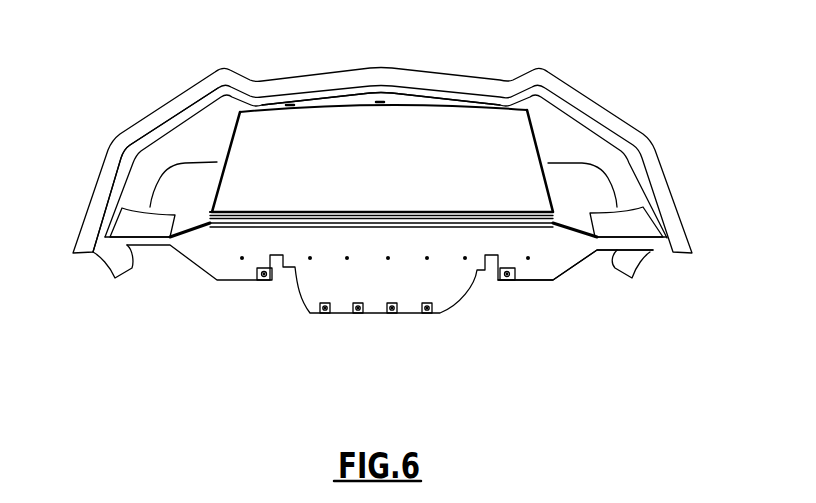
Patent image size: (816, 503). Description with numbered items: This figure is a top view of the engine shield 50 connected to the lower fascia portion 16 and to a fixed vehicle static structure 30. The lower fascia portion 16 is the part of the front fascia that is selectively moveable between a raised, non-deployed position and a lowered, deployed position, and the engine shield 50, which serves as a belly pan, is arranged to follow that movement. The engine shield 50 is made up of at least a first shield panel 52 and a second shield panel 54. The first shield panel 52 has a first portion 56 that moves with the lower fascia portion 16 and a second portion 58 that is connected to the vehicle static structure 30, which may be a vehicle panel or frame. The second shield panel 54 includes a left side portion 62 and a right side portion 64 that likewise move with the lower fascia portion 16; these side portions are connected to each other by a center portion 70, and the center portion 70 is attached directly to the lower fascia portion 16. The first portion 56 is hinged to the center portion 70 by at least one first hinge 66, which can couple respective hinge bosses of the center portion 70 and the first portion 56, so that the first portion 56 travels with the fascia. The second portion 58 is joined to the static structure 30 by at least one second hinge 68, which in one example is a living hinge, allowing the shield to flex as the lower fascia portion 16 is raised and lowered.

The lower fascia portion 16 is at (635, 138).
The static structure 30 is at (440, 285).
The engine shield 50 is at (641, 183).
The first shield panel 52 is at (310, 193).
The second shield panel 54 is at (223, 92).
The first portion 56 is at (312, 118).
The second portion 58 is at (528, 200).
The left side portion 62 is at (147, 190).
The right side portion 64 is at (613, 207).
The first hinge 66 is at (397, 94).
The second hinge 68 is at (357, 213).
The center portion 70 is at (304, 103).